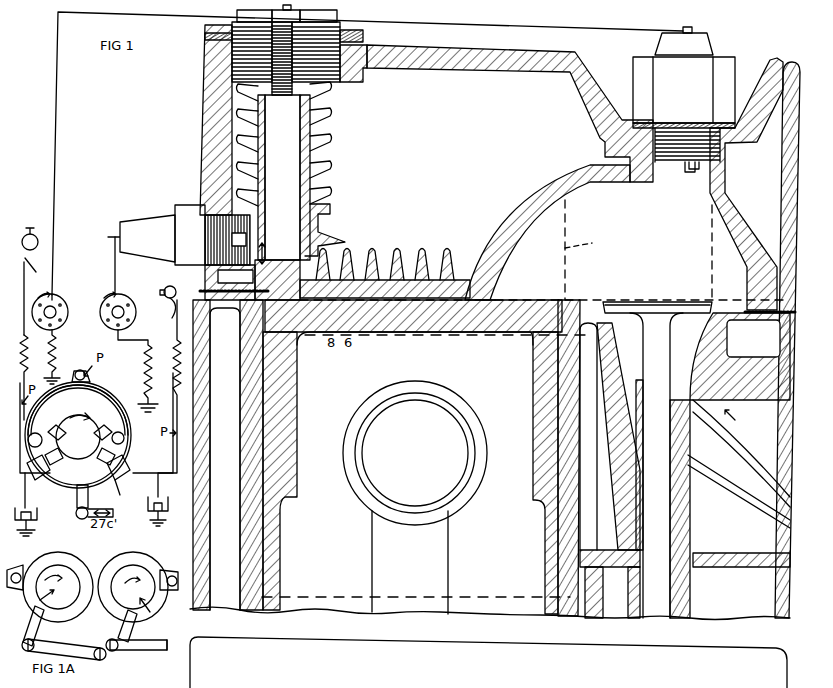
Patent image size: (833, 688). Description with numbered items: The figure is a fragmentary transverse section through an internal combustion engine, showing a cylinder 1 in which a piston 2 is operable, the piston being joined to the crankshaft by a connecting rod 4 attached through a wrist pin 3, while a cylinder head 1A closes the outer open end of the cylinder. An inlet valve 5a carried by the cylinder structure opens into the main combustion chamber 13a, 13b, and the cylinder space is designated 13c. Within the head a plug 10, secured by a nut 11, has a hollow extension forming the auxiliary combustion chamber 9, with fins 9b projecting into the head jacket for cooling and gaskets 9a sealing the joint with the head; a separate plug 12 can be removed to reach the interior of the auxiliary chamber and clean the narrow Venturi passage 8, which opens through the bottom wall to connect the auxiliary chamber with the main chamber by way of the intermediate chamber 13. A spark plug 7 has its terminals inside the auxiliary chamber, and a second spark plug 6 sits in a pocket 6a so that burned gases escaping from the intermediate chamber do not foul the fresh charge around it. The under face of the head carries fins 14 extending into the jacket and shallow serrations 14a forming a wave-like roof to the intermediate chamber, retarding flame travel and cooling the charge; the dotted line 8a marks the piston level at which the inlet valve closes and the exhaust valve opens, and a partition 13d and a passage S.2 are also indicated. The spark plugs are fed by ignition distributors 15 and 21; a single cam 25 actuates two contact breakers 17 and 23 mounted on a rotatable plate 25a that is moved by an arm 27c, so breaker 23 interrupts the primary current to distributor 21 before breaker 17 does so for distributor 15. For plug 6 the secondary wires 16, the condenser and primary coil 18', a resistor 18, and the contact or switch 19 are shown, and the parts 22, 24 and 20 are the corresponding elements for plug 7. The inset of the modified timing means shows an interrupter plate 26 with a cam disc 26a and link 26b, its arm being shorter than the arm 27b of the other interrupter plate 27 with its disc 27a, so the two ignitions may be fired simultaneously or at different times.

In FIG. 1, the cylinder 1 is at (236, 584).
In FIG. 1, the cylinder head 1A is at (199, 153).
In FIG. 1, the piston 2 is at (302, 415).
In FIG. 1, the wrist pin 3 is at (415, 453).
In FIG. 1, the connecting rod 4 is at (451, 546).
In FIG. 1, the inlet valve 5a is at (674, 360).
In FIG. 1, the spark plug 6 is at (60, 180).
In FIG. 1, the pocket 6a is at (684, 175).
In FIG. 1, the spark plug 7 is at (140, 220).
In FIG. 1, the Venturi passage 8 is at (227, 240).
In FIG. 1, the dotted line 8a is at (338, 590).
In FIG. 1, the auxiliary combustion chamber 9 is at (284, 177).
In FIG. 1, the gaskets 9a is at (326, 216).
In FIG. 1, the fins 9b is at (337, 173).
In FIG. 1, the plug 10 is at (286, 50).
In FIG. 1, the nut 11 is at (368, 40).
In FIG. 1, the separate plug 12 is at (232, 73).
In FIG. 1, the intermediate chamber 13 is at (401, 308).
In FIG. 1, the main combustion chamber 13a is at (547, 232).
In FIG. 1, the main combustion chamber 13b is at (542, 250).
In FIG. 1, the cylinder space 13c is at (482, 575).
In FIG. 1, the chamber partition 13d is at (593, 234).
In FIG. 1, the fins 14 is at (452, 247).
In FIG. 1, the serrations 14a is at (481, 308).
In FIG. 1, the ignition distributor 15 is at (56, 297).
In FIG. 1, the secondary wires 16 is at (66, 338).
In FIG. 1, the contact breaker 17 is at (45, 487).
In FIG. 1, the resistor 18 is at (33, 374).
In FIG. 1, the condenser and primary coil 18' is at (43, 522).
In FIG. 1, the contact or switch 19 is at (31, 274).
In FIG. 1, the contact or switch 20 is at (167, 287).
In FIG. 1, the ignition distributor 21 is at (134, 302).
In FIG. 1, the secondary wires 22 is at (145, 372).
In FIG. 1, the contact breaker 23 is at (120, 482).
In FIG. 1, the condenser and primary coil 24 is at (190, 316).
In FIG. 1, the cam 25 is at (96, 444).
In FIG. 1, the rotatable plate 25a is at (141, 457).
In FIG. 1A, the interrupter plate 26 is at (35, 612).
In FIG. 1A, the cam disc 26a is at (82, 566).
In FIG. 1A, the link bar 26b is at (54, 631).
In FIG. 1A, the lever 27 is at (160, 612).
In FIG. 1A, the cam disc 27a is at (158, 568).
In FIG. 1A, the arm 27b is at (125, 636).
In FIG. 1A, the arm 27c is at (156, 656).
In FIG. 1, the cooling passage S.2 is at (233, 303).